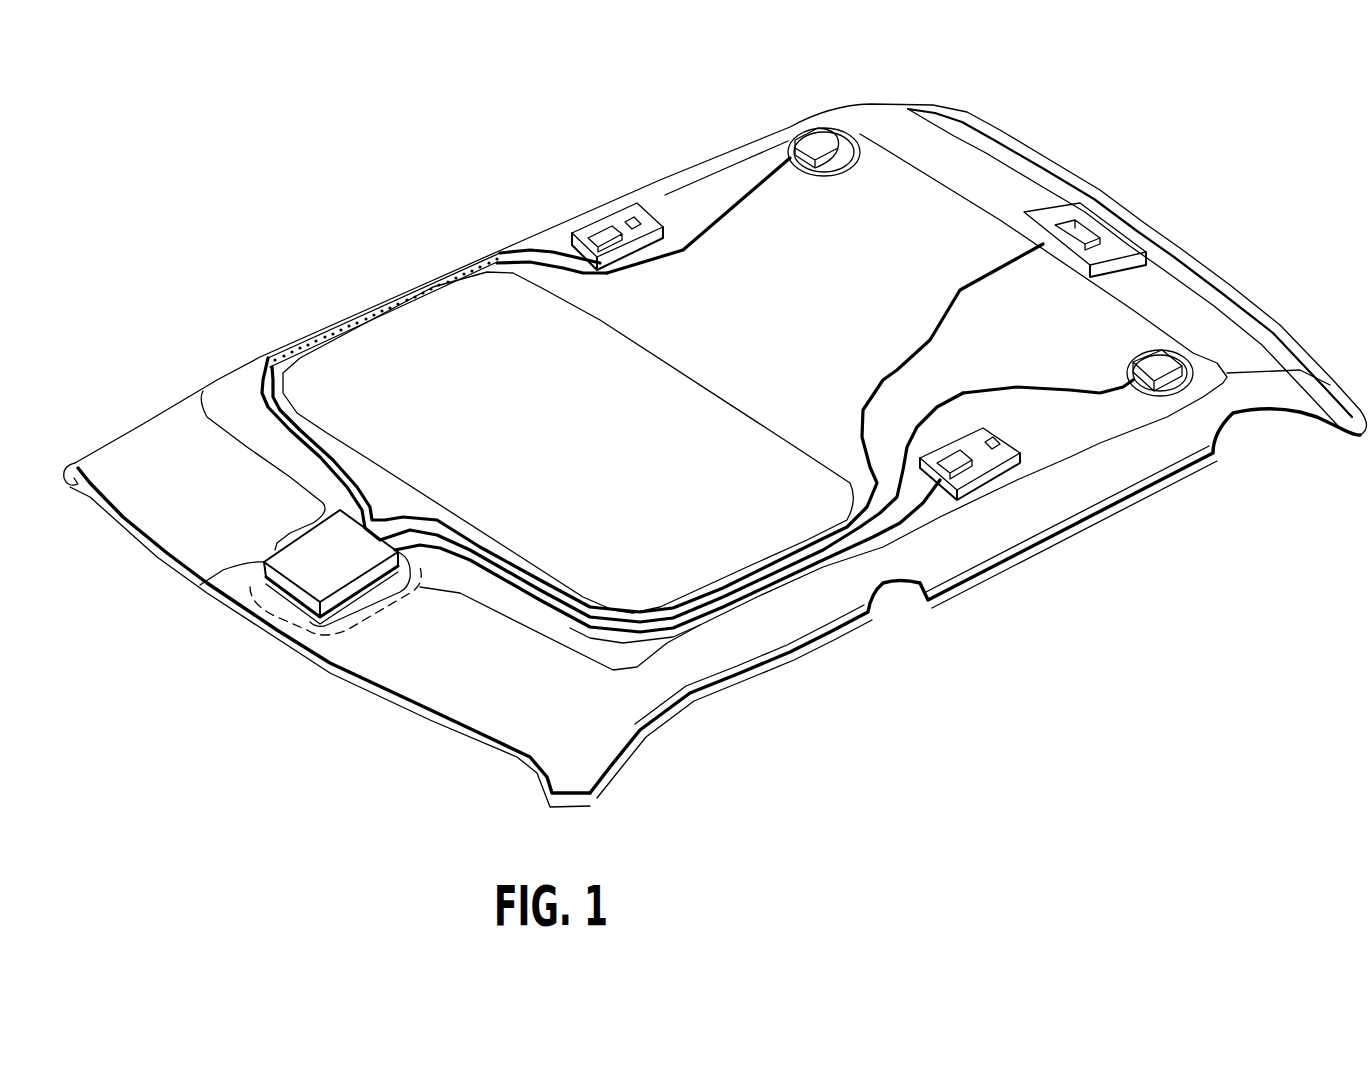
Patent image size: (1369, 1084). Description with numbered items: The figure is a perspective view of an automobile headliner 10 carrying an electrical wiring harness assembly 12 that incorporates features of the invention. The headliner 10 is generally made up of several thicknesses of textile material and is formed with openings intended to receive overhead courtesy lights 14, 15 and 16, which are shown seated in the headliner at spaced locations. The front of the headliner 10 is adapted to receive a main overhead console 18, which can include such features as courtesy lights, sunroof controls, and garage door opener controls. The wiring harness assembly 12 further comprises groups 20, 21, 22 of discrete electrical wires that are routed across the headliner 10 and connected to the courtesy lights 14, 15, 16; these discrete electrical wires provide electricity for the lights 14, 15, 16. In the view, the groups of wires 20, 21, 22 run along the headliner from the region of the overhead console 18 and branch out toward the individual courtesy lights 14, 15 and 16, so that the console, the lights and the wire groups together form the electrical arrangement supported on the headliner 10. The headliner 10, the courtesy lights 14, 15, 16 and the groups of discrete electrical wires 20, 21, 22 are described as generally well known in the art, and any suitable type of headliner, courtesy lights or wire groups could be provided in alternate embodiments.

The headliner 10 is at (728, 655).
The electrical wiring harness assembly 12 is at (240, 565).
The overhead courtesy light 14 is at (582, 230).
The overhead courtesy light 15 is at (813, 140).
The overhead courtesy light 16 is at (1125, 243).
The main overhead console 18 is at (283, 615).
The group of discrete electrical wires 20 is at (518, 253).
The group of discrete electrical wires 21 is at (750, 197).
The group of discrete electrical wires 22 is at (952, 310).